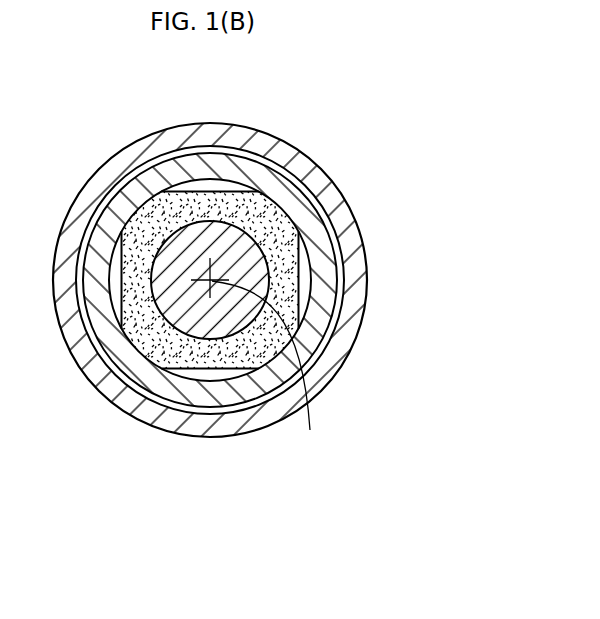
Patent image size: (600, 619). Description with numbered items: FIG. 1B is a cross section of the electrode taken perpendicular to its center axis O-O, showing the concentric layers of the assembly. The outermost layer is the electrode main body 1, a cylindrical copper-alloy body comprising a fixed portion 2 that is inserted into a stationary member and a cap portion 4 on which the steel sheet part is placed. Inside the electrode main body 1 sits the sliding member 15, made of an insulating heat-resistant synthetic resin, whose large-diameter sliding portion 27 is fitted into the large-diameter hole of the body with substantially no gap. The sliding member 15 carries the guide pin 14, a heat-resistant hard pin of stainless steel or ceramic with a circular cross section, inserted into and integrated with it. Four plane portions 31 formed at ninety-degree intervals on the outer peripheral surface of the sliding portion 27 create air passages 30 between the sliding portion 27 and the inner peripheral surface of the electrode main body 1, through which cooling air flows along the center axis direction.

The electrode main body 1 is at (323, 123).
The fixed portion 2 is at (102, 192).
The cap portion 4 is at (119, 147).
The guide pin 14 is at (245, 291).
The sliding member 15 is at (196, 378).
The sliding portion 27 is at (116, 366).
The air passages 30 is at (112, 290).
The plane portions 31 is at (111, 272).